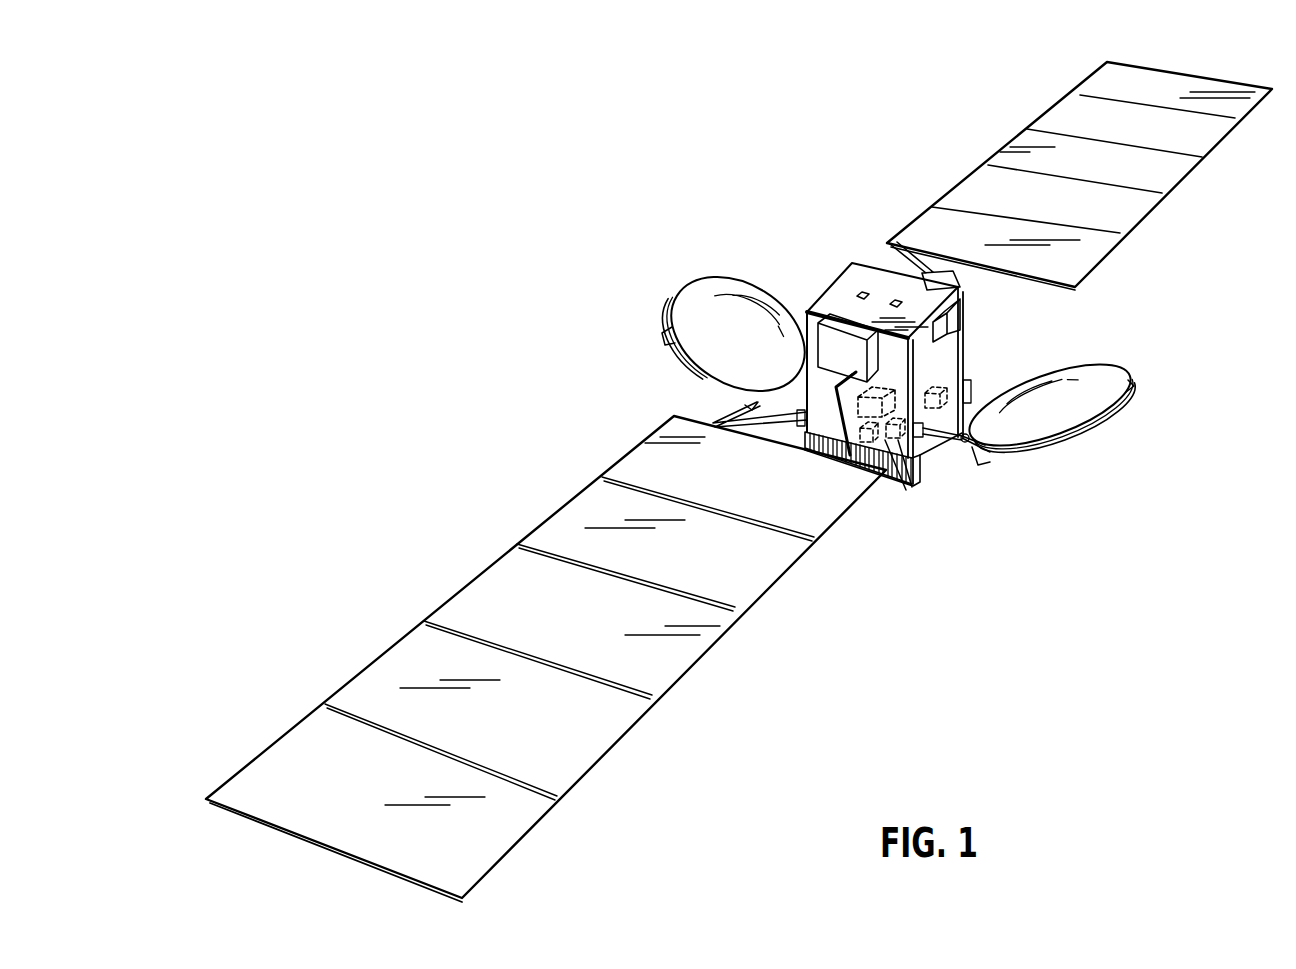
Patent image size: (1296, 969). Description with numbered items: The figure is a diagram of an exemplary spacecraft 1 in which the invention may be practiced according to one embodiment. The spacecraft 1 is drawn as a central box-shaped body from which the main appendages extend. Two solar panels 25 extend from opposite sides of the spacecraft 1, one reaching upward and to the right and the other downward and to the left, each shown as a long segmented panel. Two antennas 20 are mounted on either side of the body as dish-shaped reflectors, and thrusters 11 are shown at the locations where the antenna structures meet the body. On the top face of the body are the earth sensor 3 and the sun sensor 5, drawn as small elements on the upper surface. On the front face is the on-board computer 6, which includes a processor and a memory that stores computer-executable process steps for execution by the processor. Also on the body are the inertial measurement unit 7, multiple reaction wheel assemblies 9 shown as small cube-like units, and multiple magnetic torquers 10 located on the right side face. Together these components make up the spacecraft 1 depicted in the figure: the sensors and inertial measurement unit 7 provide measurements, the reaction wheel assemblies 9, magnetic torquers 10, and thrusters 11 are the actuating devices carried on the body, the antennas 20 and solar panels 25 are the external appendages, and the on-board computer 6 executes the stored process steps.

The spacecraft 1 is at (757, 192).
The earth sensor 3 is at (858, 292).
The sun sensor 5 is at (893, 300).
The on-board computer 6 is at (833, 338).
The inertial measurement unit 7 is at (890, 384).
The reaction wheel assemblies 9 is at (947, 384).
The magnetic torquers 10 is at (950, 318).
The thrusters 11 is at (742, 420).
The antennas 20 is at (686, 300).
The solar panels 25 is at (1155, 210).